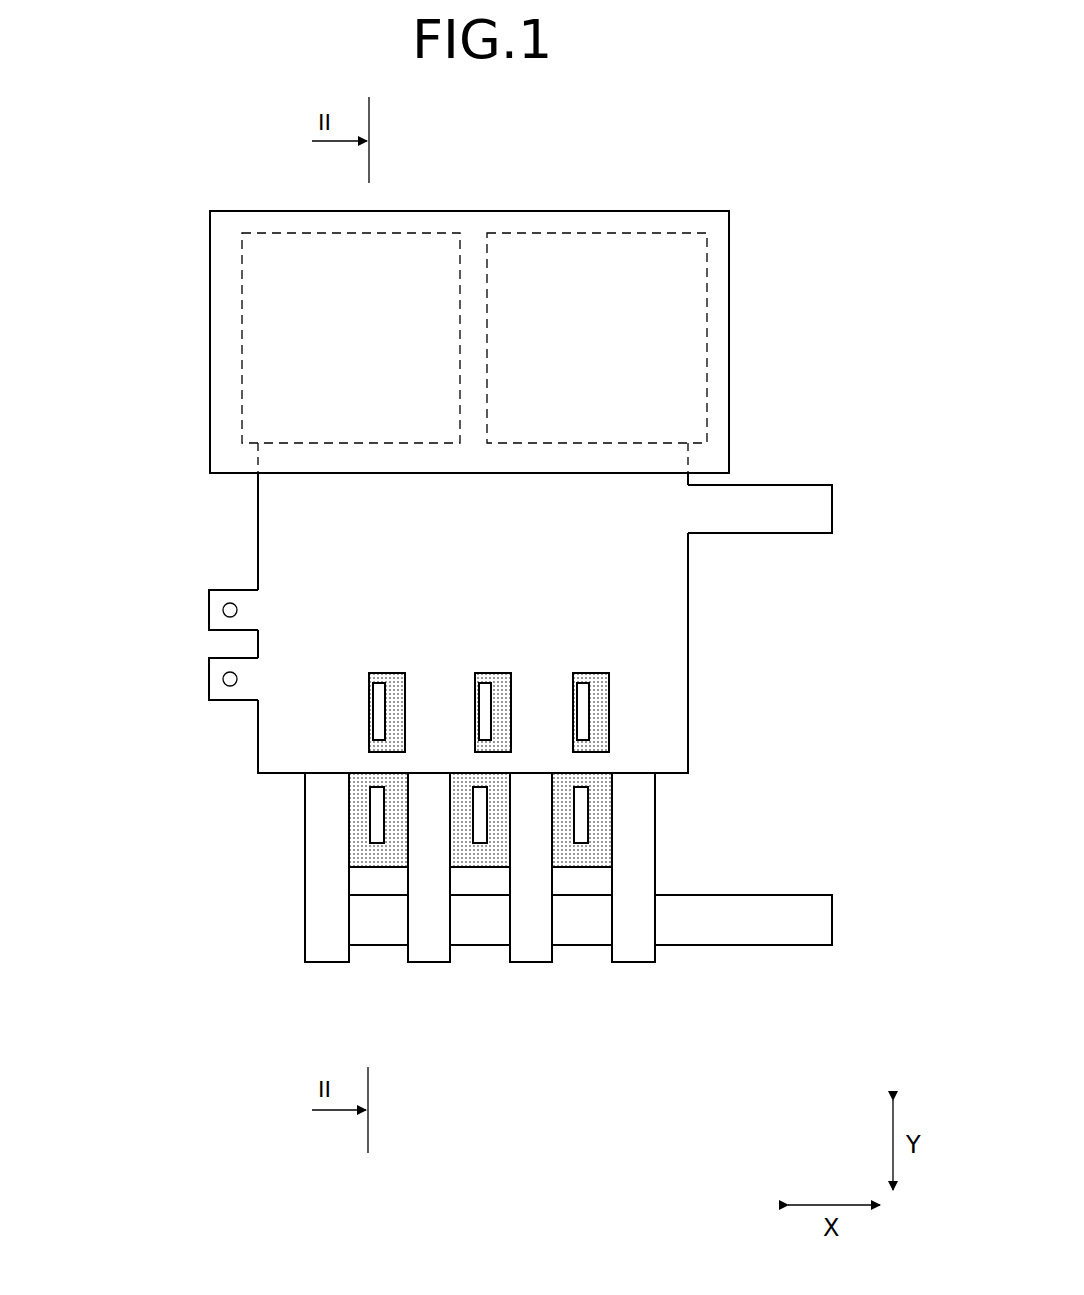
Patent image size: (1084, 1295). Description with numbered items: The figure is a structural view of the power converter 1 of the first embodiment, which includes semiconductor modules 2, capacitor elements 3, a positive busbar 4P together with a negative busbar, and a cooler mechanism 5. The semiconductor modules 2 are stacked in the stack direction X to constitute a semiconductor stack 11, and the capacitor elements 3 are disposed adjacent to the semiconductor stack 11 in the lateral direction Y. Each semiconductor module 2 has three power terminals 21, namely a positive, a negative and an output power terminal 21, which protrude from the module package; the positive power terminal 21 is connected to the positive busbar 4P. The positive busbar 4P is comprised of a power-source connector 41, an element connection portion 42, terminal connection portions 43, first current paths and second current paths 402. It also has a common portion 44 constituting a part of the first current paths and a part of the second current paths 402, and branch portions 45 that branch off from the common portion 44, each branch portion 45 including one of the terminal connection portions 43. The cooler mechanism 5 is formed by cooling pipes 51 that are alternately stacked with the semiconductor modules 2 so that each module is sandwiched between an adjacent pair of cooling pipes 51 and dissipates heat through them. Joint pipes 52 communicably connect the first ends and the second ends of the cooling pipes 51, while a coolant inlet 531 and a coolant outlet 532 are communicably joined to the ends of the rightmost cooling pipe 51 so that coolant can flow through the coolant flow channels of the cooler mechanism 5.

The power converter 1 is at (191, 1022).
The semiconductor module 2 is at (377, 857).
The capacitor element 3 is at (413, 262).
The positive busbar 4P is at (660, 603).
The semiconductor stack 11 is at (745, 849).
The power terminal 21 is at (580, 718).
The power-source connector 41 is at (217, 603).
The element connection portion 42 is at (639, 460).
The terminal connection portion 43 is at (560, 692).
The common portion 44 is at (643, 552).
The branch portion 45 is at (537, 732).
The second current path 402 is at (312, 460).
The cooler mechanism 5 is at (320, 925).
The cooling pipe 51 is at (430, 945).
The joint pipe 52 is at (493, 928).
The coolant inlet 531 is at (800, 923).
The coolant outlet 532 is at (815, 515).